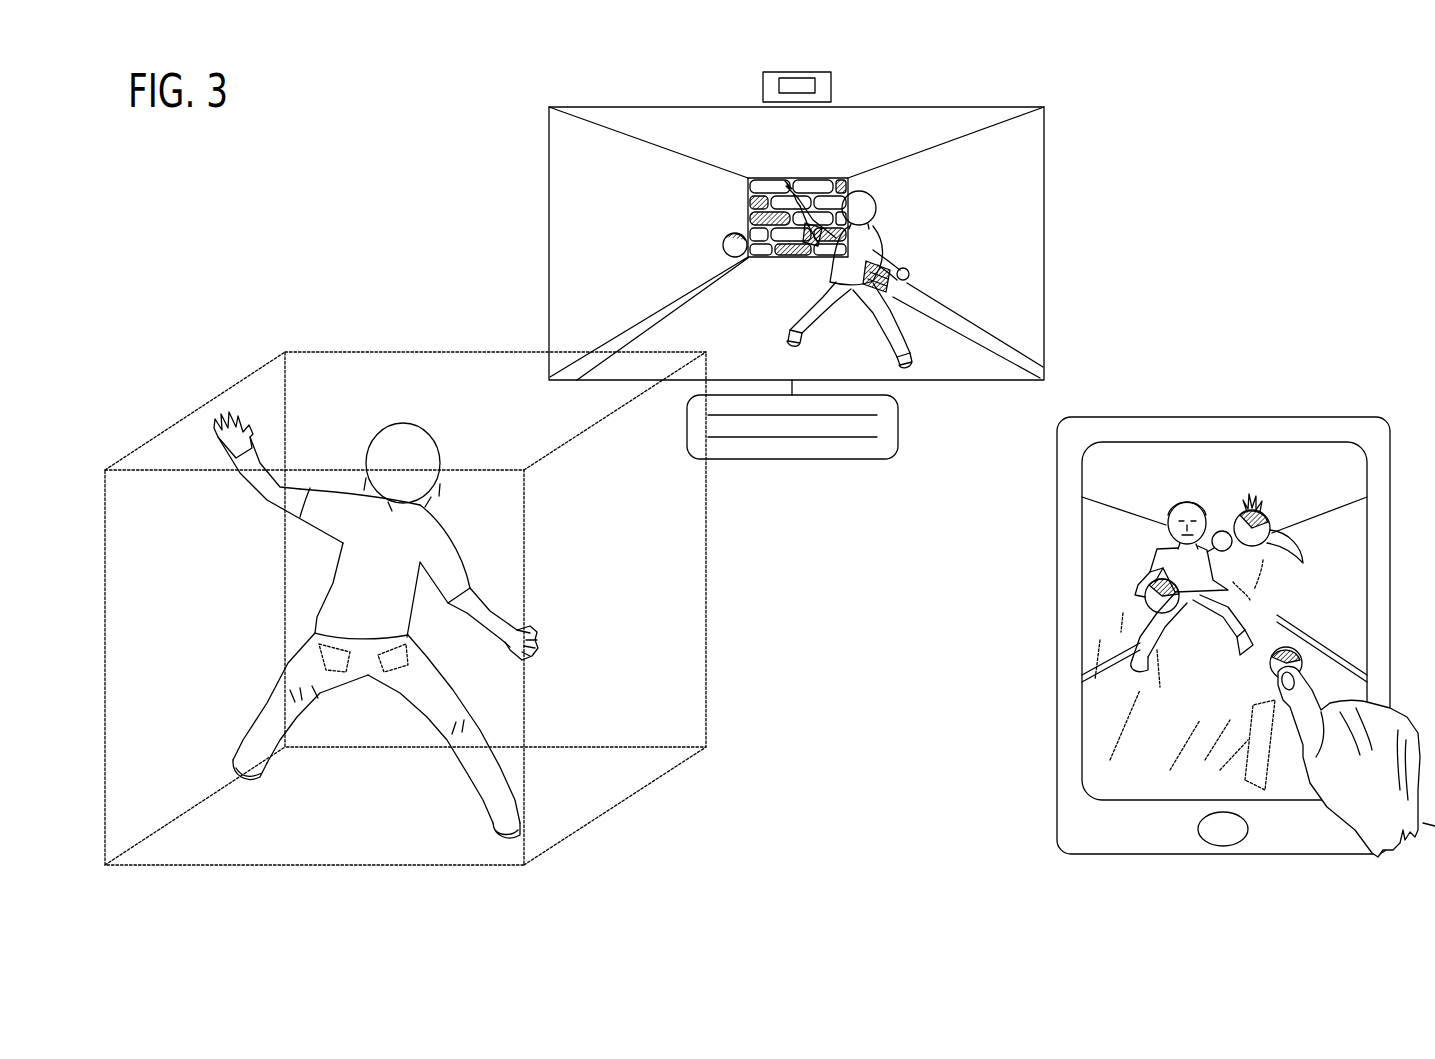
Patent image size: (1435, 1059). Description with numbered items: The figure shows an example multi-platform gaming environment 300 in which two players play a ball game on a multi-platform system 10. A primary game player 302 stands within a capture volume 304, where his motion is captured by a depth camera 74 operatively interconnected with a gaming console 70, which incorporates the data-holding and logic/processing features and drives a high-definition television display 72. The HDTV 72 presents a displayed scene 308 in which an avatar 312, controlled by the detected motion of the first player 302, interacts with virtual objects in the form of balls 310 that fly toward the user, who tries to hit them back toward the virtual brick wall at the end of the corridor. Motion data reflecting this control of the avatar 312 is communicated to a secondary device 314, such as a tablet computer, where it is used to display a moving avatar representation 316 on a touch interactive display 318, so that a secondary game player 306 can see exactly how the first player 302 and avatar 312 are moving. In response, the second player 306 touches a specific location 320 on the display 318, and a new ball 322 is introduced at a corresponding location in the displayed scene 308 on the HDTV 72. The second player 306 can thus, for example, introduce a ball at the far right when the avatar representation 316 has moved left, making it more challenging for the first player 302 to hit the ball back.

The multi-platform gaming environment 300 is at (1318, 112).
The multi-platform system 10 is at (1080, 115).
The depth camera 74 is at (763, 73).
The high-definition television display 72 is at (549, 163).
The displayed scene 308 is at (796, 243).
The new ball 322 is at (742, 240).
The avatar 312 is at (880, 330).
The balls 310 is at (805, 258).
The gaming console 70 is at (786, 458).
The capture volume 304 is at (311, 290).
The primary game player 302 is at (376, 625).
The secondary device 314 is at (1172, 412).
The touch interactive display 318 is at (1224, 621).
The moving avatar representation 316 is at (1188, 504).
The specific location 320 is at (1300, 660).
The secondary game player 306 is at (1340, 761).